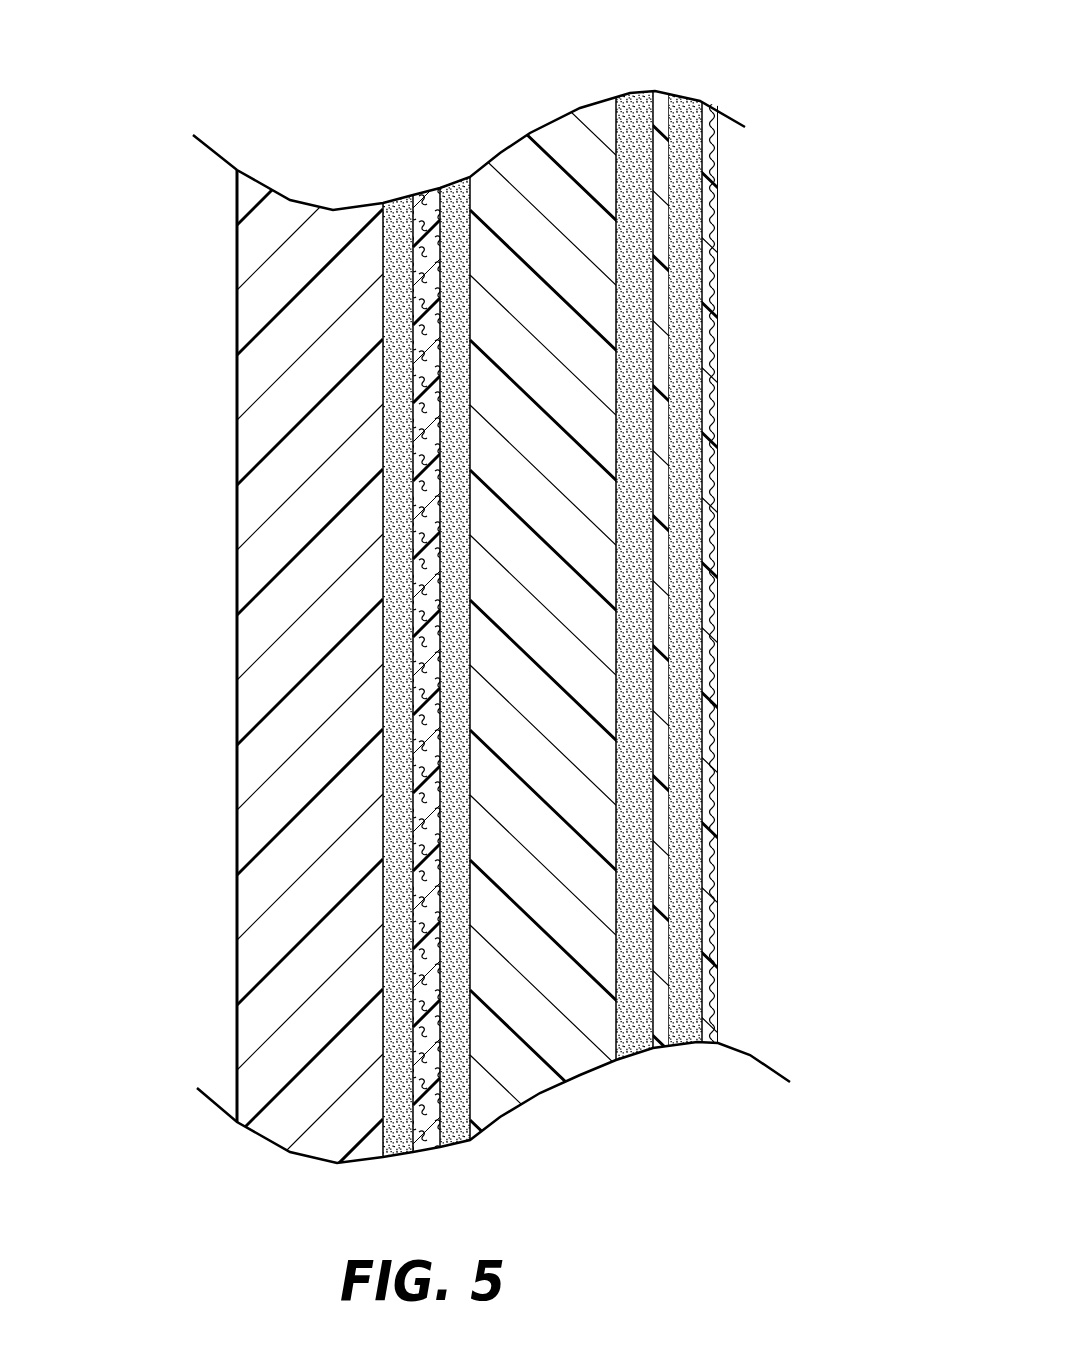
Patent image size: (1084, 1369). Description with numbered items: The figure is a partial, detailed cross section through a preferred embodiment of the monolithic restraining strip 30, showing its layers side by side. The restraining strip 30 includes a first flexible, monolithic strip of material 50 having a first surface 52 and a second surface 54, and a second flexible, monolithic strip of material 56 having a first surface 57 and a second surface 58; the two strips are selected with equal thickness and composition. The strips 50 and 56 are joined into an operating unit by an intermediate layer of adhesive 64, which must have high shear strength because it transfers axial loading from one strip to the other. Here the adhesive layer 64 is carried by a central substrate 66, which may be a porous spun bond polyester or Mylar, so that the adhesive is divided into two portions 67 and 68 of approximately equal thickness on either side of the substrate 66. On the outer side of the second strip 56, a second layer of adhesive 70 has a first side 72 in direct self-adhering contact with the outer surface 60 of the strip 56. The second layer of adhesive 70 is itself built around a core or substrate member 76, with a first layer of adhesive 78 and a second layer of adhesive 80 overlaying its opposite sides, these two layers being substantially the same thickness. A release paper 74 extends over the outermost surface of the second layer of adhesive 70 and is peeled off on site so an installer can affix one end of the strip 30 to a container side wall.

The restraining strip 30 is at (768, 318).
The first flexible monolithic strip of material 50 is at (237, 553).
The first surface 52 is at (237, 900).
The second surface 54 is at (398, 245).
The second flexible monolithic strip of material 56 is at (523, 133).
The first surface 57 is at (620, 925).
The second surface 58 is at (470, 1080).
The outer surface 60 is at (620, 842).
The intermediate layer of adhesive 64 is at (420, 190).
The central substrate 66 is at (428, 1103).
The adhesive portion 67 is at (402, 1127).
The adhesive portion 68 is at (447, 200).
The second layer of adhesive 70 is at (712, 94).
The first side 72 is at (616, 606).
The release paper 74 is at (718, 448).
The substrate member 76 is at (658, 188).
The first layer of adhesive 78 is at (632, 112).
The second layer of adhesive 80 is at (685, 110).